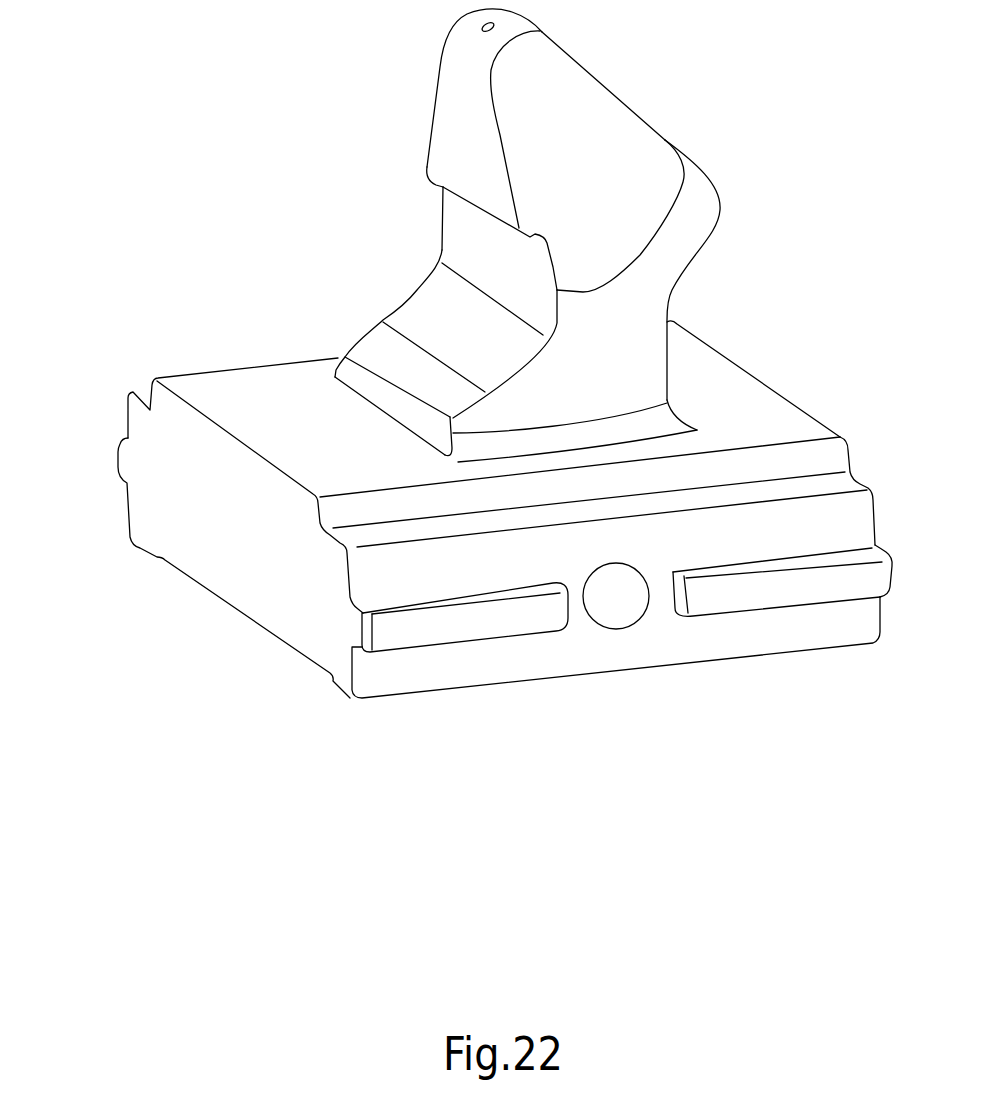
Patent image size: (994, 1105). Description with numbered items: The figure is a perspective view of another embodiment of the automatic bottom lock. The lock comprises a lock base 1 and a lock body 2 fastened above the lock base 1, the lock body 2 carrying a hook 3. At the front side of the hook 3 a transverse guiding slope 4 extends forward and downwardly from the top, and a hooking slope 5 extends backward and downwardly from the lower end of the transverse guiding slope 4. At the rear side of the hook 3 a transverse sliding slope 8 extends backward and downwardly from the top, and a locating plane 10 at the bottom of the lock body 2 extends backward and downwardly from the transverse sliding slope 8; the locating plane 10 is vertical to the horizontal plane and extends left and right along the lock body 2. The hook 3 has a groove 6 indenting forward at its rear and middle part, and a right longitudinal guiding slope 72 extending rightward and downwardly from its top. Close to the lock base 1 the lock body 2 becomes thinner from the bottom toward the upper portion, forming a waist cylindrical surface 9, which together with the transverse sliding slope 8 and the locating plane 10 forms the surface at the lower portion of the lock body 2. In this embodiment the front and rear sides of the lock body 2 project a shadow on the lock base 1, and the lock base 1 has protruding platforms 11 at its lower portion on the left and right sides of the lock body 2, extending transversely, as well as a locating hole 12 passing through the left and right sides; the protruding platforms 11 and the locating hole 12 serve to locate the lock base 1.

The lock base 1 is at (461, 529).
The lock body 2 is at (286, 370).
The hook 3 is at (475, 223).
The transverse guiding slope 4 is at (665, 140).
The hooking slope 5 is at (697, 260).
The groove 6 is at (530, 240).
The transverse sliding slope 8 is at (453, 293).
The waist cylindrical surface 9 is at (583, 352).
The locating plane 10 is at (410, 413).
The protruding platforms 11 is at (453, 628).
The locating hole 12 is at (617, 573).
The right longitudinal guiding slope 72 is at (597, 217).